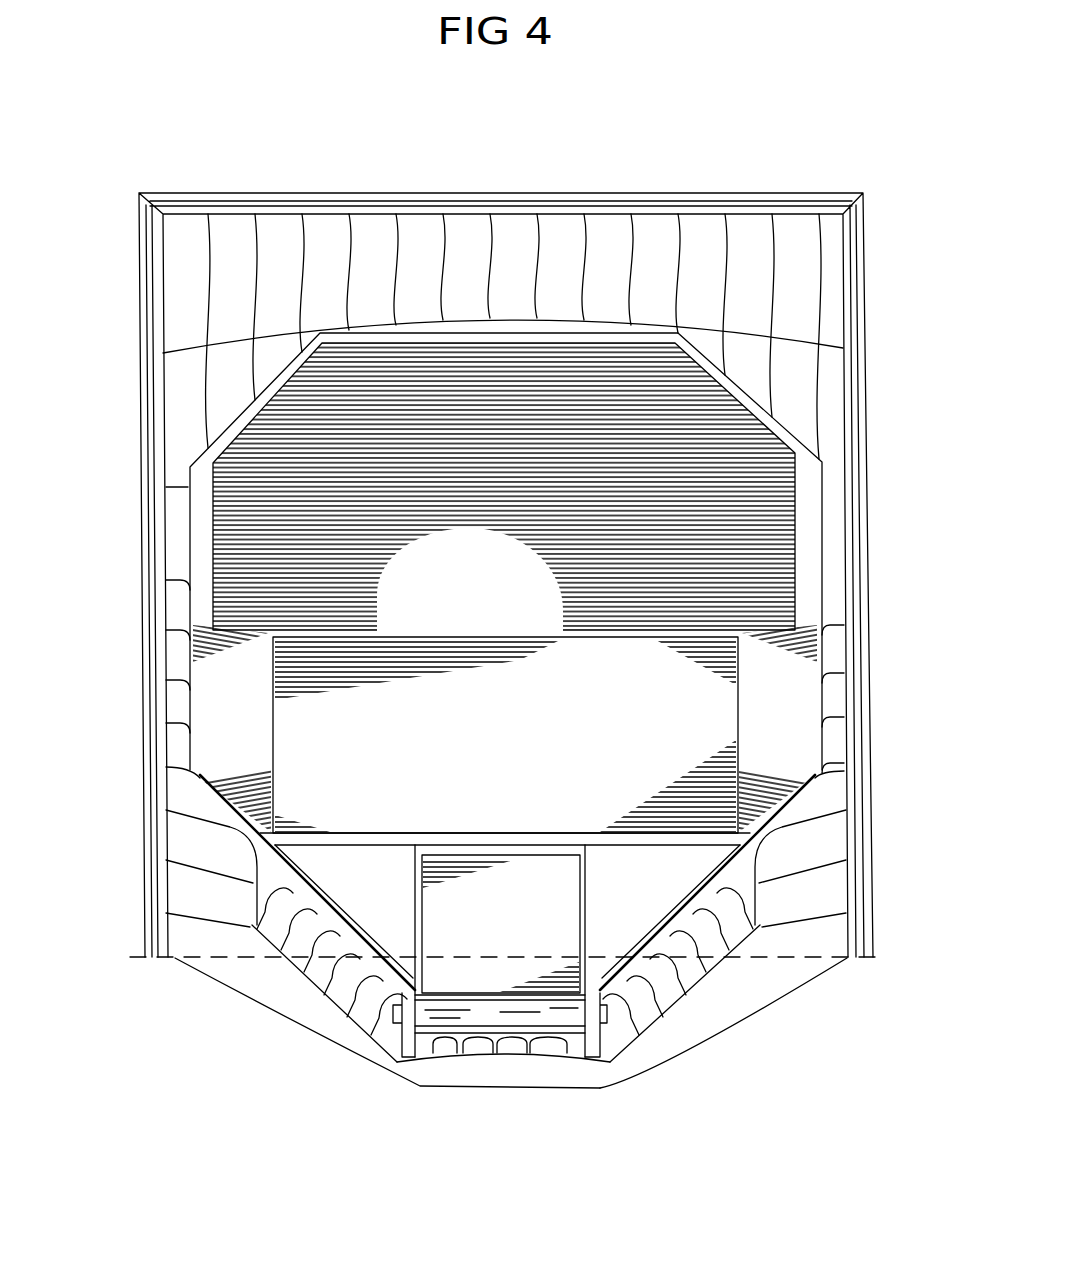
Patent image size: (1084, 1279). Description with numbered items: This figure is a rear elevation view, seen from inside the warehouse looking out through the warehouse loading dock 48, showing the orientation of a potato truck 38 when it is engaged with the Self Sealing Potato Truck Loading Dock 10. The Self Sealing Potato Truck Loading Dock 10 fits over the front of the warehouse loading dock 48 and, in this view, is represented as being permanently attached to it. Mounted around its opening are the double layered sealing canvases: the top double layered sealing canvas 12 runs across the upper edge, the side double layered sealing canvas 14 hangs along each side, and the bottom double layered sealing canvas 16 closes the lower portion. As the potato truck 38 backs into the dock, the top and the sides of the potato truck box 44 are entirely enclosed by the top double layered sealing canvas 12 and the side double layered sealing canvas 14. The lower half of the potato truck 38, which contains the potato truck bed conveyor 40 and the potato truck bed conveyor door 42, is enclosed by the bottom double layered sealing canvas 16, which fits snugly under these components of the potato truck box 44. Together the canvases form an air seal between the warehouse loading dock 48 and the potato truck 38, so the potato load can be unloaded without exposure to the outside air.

The Self Sealing Potato Truck Loading Dock 10 is at (397, 190).
The top double layered sealing canvas 12 is at (505, 258).
The side double layered sealing canvas 14 is at (183, 690).
The bottom double layered sealing canvas 16 is at (333, 1010).
The potato truck 38 is at (443, 425).
The potato truck bed conveyor 40 is at (458, 1007).
The potato truck bed conveyor door 42 is at (490, 932).
The potato truck box 44 is at (487, 601).
The warehouse loading dock 48 is at (787, 957).